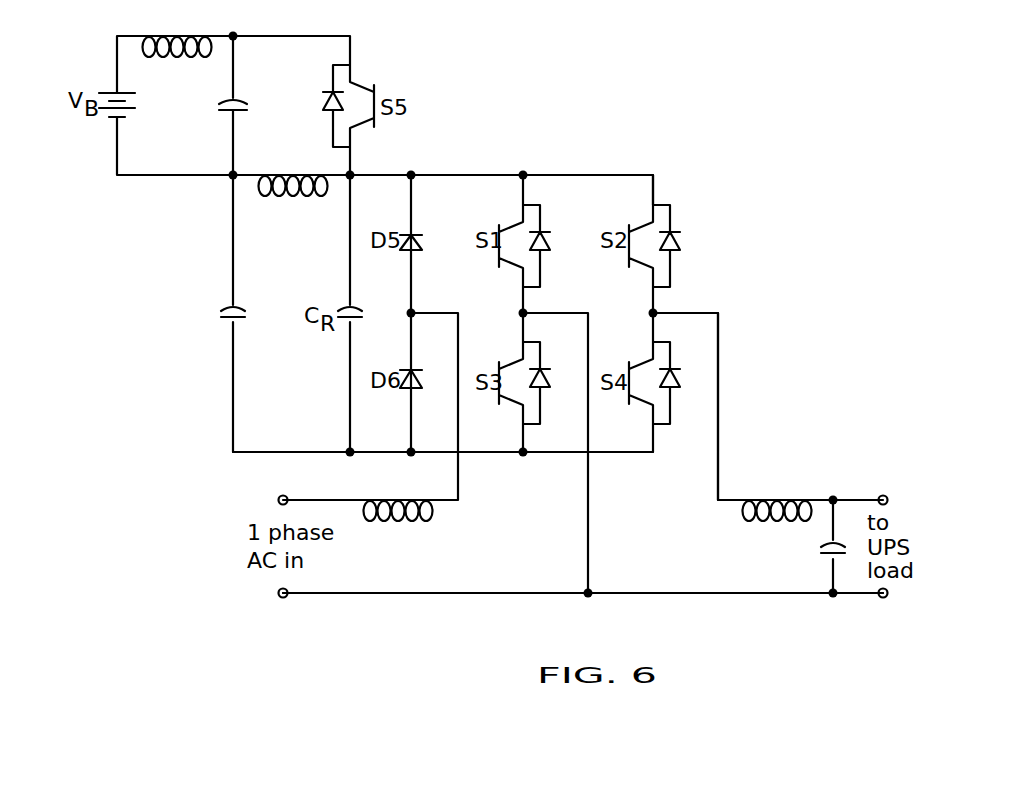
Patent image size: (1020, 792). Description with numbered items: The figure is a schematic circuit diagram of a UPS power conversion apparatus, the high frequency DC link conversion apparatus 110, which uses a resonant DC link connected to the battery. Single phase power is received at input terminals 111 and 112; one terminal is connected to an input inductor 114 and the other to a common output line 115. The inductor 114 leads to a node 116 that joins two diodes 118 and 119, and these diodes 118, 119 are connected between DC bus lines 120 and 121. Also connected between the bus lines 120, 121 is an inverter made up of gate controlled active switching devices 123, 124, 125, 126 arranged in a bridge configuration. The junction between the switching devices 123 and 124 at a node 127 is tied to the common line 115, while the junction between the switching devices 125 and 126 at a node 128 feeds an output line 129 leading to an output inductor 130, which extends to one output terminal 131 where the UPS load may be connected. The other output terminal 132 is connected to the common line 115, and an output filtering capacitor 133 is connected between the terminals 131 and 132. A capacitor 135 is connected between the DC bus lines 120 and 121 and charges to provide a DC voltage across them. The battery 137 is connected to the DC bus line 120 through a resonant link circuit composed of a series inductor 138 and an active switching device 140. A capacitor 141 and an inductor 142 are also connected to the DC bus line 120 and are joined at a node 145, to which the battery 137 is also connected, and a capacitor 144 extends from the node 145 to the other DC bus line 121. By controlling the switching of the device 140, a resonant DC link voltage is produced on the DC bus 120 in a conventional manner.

The high frequency DC link conversion apparatus 110 is at (472, 175).
The input terminal 111 is at (287, 496).
The input terminal 112 is at (280, 597).
The input inductor 114 is at (398, 500).
The common output line 115 is at (393, 597).
The node 116 is at (410, 316).
The diode 118 is at (418, 250).
The diode 119 is at (403, 392).
The DC bus line 120 is at (597, 175).
The DC bus line 121 is at (482, 452).
The gate controlled active switching device 123 is at (499, 225).
The gate controlled active switching device 124 is at (500, 365).
The gate controlled active switching device 125 is at (629, 224).
The gate controlled active switching device 126 is at (630, 365).
The node 127 is at (527, 311).
The node 128 is at (657, 311).
The output line 129 is at (718, 382).
The output inductor 130 is at (783, 500).
The output terminal 131 is at (878, 494).
The output terminal 132 is at (878, 598).
The output filtering capacitor 133 is at (826, 555).
The capacitor 135 is at (343, 308).
The battery 137 is at (106, 120).
The series inductor 138 is at (162, 57).
The active switching device 140 is at (374, 86).
The capacitor 141 is at (240, 113).
The inductor 142 is at (280, 195).
The capacitor 144 is at (228, 308).
The node 145 is at (230, 178).